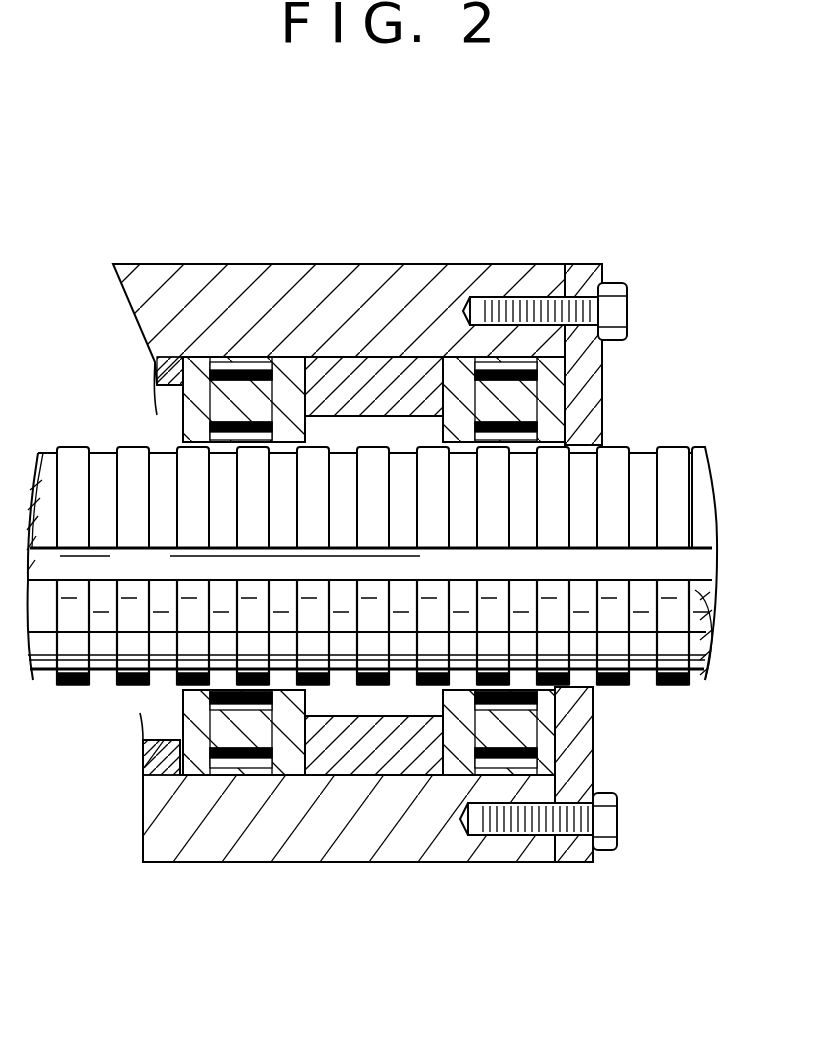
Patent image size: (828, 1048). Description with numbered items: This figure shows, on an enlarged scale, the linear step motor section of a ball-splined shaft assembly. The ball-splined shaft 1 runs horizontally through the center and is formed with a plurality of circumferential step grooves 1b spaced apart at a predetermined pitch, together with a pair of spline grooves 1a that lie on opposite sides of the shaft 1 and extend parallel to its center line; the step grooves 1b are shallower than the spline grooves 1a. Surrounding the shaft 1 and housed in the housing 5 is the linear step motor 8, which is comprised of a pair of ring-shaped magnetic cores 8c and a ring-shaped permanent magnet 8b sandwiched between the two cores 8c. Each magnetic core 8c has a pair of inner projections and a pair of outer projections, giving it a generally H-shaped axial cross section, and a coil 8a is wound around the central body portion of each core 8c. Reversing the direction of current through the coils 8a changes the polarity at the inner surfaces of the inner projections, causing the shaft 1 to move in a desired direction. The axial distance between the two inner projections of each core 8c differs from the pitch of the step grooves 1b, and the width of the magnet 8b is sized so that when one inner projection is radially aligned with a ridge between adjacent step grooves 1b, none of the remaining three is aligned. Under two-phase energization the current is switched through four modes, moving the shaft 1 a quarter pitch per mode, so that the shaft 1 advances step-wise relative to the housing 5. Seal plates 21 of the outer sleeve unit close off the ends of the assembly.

The ball-splined shaft 1 is at (398, 483).
The spline grooves 1a is at (690, 567).
The circumferential step grooves 1b is at (645, 493).
The housing 5 is at (407, 842).
The linear step motor 8 is at (374, 463).
The coil 8a is at (504, 493).
The ring-shaped magnet 8b is at (370, 370).
The magnetic cores 8c is at (283, 357).
The seal plates 21 is at (580, 750).